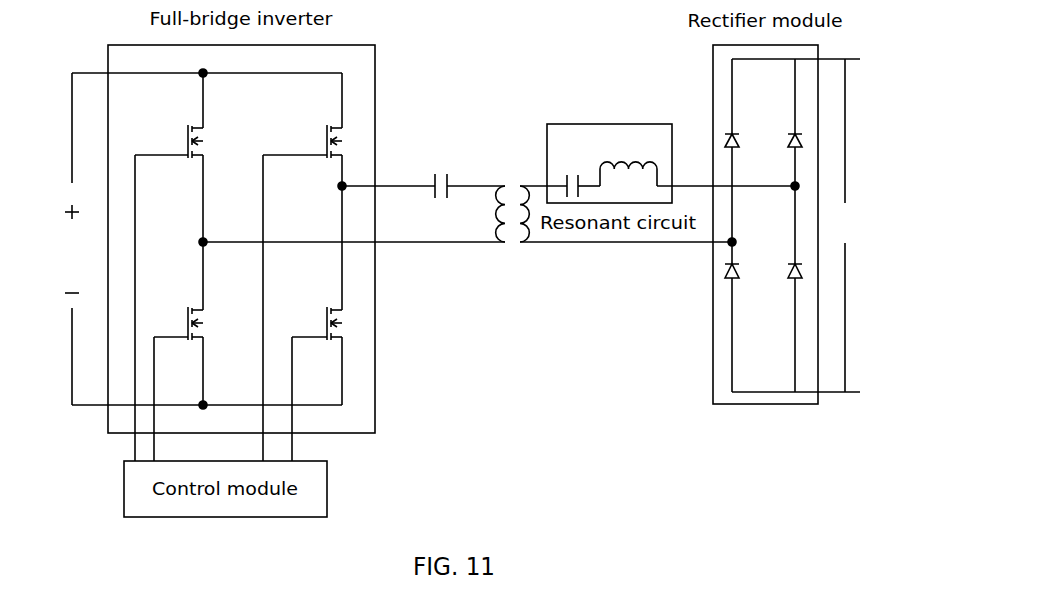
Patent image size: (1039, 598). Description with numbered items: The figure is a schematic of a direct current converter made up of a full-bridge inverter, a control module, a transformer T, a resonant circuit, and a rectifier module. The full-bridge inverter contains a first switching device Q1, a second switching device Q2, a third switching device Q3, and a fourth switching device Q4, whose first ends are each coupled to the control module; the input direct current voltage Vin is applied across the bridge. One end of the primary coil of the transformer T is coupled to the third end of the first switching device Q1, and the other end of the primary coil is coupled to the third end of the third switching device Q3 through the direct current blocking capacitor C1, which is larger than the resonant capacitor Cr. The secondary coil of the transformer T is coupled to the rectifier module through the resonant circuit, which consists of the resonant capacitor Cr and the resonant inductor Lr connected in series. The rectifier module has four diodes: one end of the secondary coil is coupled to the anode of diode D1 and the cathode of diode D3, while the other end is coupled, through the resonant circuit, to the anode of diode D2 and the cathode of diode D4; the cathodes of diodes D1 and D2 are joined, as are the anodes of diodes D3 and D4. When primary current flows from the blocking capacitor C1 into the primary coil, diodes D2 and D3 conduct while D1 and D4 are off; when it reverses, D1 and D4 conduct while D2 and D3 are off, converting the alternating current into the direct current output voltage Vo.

The first switching device Q1 is at (169, 293).
The second switching device Q2 is at (176, 384).
The third switching device Q3 is at (302, 293).
The fourth switching device Q4 is at (313, 384).
The direct current blocking capacitor C1 is at (423, 172).
The transformer T is at (501, 214).
The resonant capacitor Cr is at (579, 172).
The resonant inductor Lr is at (697, 160).
The diode D1 is at (747, 128).
The diode D2 is at (780, 155).
The diode D3 is at (747, 284).
The diode D4 is at (780, 259).
The input direct current voltage Vin is at (72, 239).
The output direct current voltage Vo is at (845, 225).